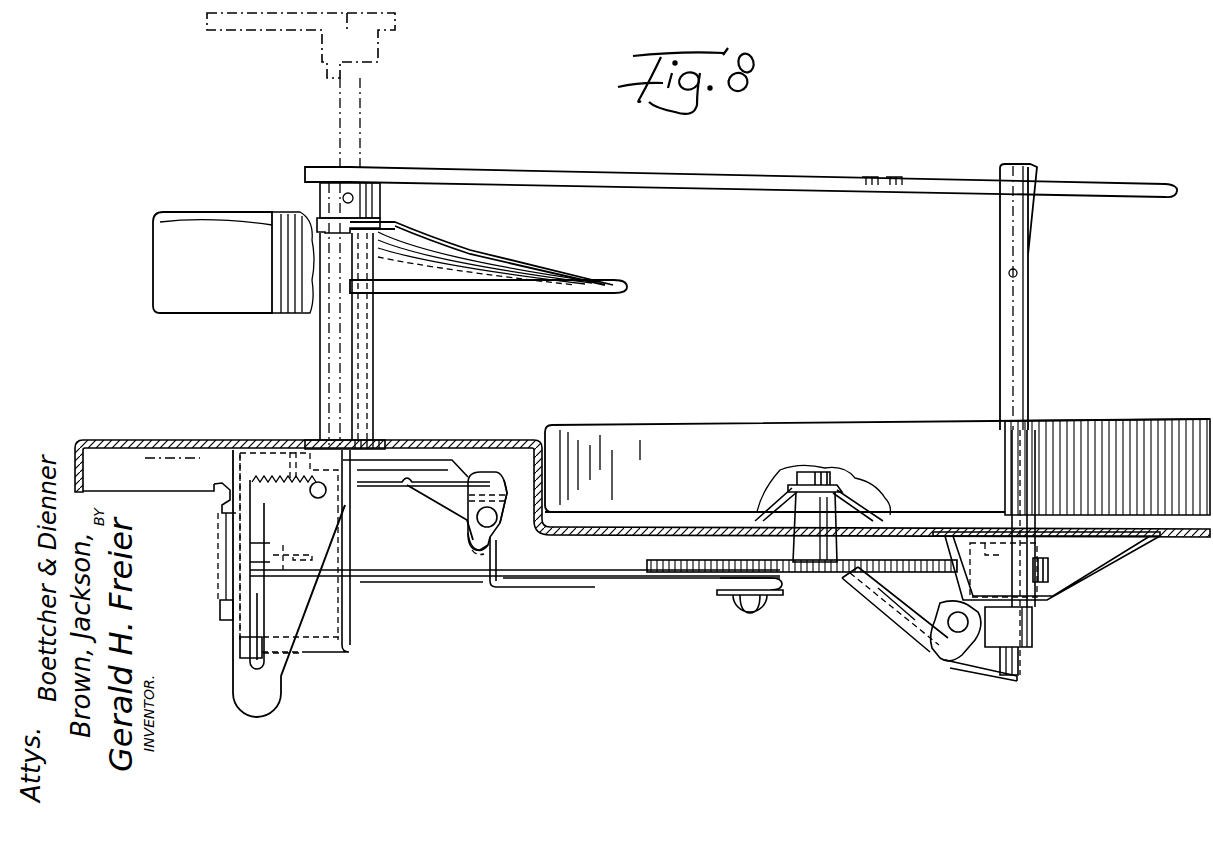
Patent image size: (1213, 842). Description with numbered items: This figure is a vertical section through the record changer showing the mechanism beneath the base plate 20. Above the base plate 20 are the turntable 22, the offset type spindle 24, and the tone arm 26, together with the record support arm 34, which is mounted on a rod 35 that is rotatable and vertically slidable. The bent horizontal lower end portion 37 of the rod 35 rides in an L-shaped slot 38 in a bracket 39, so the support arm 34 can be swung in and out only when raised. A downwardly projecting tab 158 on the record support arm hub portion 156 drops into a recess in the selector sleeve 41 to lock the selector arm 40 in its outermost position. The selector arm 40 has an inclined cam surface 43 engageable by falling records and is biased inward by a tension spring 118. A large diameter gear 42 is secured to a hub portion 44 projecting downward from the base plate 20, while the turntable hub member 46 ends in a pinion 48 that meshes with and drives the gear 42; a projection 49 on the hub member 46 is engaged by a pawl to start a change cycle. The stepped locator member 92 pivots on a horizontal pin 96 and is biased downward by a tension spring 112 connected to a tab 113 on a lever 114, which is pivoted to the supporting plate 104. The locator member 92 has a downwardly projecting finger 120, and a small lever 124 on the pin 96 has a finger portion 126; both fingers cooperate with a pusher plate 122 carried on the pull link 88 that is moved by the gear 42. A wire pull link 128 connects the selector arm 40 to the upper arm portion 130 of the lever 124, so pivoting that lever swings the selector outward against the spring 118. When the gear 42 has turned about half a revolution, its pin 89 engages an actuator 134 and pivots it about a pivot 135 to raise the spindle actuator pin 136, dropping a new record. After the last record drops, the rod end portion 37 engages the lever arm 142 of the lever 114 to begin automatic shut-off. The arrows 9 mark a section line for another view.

The section line 9- 9 is at (183, 452).
The base plate 20 is at (120, 439).
The turntable 22 is at (897, 424).
The offset type spindle 24 is at (1030, 292).
The tone arm 26 is at (172, 262).
The record support arm 34 is at (262, 36).
The rod 35 is at (362, 95).
The lower end portion 37 is at (313, 652).
The L-shaped slot 38 is at (262, 530).
The bracket 39 is at (230, 690).
The selector arm 40 is at (457, 298).
The sleeve portion 41 is at (320, 344).
The large diameter gear 42 is at (845, 576).
The inclined cam surface 43 is at (515, 262).
The hub portion 44 is at (790, 536).
The hub member 46 is at (1037, 540).
The pinion 48 is at (1045, 563).
The projection 49 is at (965, 550).
The pull link 88 is at (466, 582).
The pin 89 is at (745, 613).
The stepped locator member 92 is at (240, 452).
The pin 96 is at (497, 521).
The supporting plate 104 is at (230, 510).
The tension spring 112 is at (217, 558).
The tab 113 is at (222, 608).
The lever 114 is at (247, 622).
The tension spring 118 is at (290, 450).
The finger 120 is at (470, 556).
The pusher plate 122 is at (495, 566).
The small lever 124 is at (500, 480).
The finger portion 126 is at (475, 546).
The wire pull link 128 is at (435, 527).
The upper arm portion 130 is at (492, 470).
The actuator 134 is at (877, 610).
The pivot 135 is at (933, 662).
The spindle actuator pin 136 is at (1020, 662).
The lever arm 142 is at (250, 652).
The record support arm hub portion 156 is at (384, 203).
The tab 158 is at (316, 224).